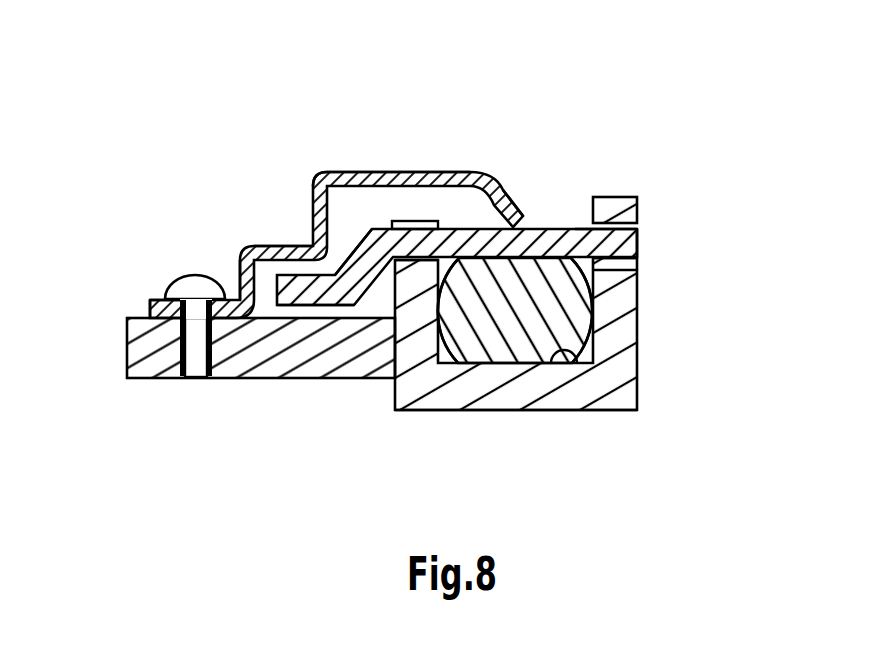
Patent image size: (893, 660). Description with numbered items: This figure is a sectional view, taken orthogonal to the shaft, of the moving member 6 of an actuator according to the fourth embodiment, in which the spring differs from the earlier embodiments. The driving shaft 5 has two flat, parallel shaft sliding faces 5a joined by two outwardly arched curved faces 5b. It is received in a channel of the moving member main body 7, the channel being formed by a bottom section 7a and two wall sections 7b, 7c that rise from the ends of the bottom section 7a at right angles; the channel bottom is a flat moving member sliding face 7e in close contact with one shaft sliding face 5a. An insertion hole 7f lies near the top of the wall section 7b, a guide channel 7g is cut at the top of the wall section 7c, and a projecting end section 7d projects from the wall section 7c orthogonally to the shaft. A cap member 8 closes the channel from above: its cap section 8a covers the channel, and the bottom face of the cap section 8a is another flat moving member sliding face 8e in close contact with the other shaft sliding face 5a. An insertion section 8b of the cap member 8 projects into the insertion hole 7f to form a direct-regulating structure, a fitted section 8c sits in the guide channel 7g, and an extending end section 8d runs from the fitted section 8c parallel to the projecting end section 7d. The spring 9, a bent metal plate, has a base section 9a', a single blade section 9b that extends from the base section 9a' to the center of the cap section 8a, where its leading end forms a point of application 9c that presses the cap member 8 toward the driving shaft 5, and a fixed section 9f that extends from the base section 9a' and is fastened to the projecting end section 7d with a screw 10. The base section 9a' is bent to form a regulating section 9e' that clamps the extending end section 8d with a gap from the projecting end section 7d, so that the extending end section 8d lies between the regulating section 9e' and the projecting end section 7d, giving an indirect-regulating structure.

The driving shaft 5 is at (597, 313).
The shaft sliding face 5a is at (530, 262).
The curved face 5b is at (463, 260).
The moving member 6 is at (312, 170).
The moving member main body 7 is at (642, 390).
The bottom section 7a is at (560, 410).
The wall section 7b is at (622, 197).
The wall section 7c is at (420, 262).
The projecting end section 7d is at (282, 380).
The moving member sliding face 7e is at (552, 358).
The insertion hole 7f is at (638, 230).
The guide channel 7g is at (392, 221).
The cap member 8 is at (480, 222).
The cap section 8a is at (575, 229).
The insertion section 8b is at (638, 242).
The fitted section 8c is at (358, 232).
The extending end section 8d is at (242, 256).
The moving member sliding face 8e is at (595, 290).
The spring 9 is at (367, 168).
The base section 9a' is at (264, 179).
The blade section 9b is at (402, 179).
The point of application 9c is at (518, 224).
The regulating section 9e' is at (213, 217).
The fixed section 9f is at (165, 300).
The screw 10 is at (193, 274).